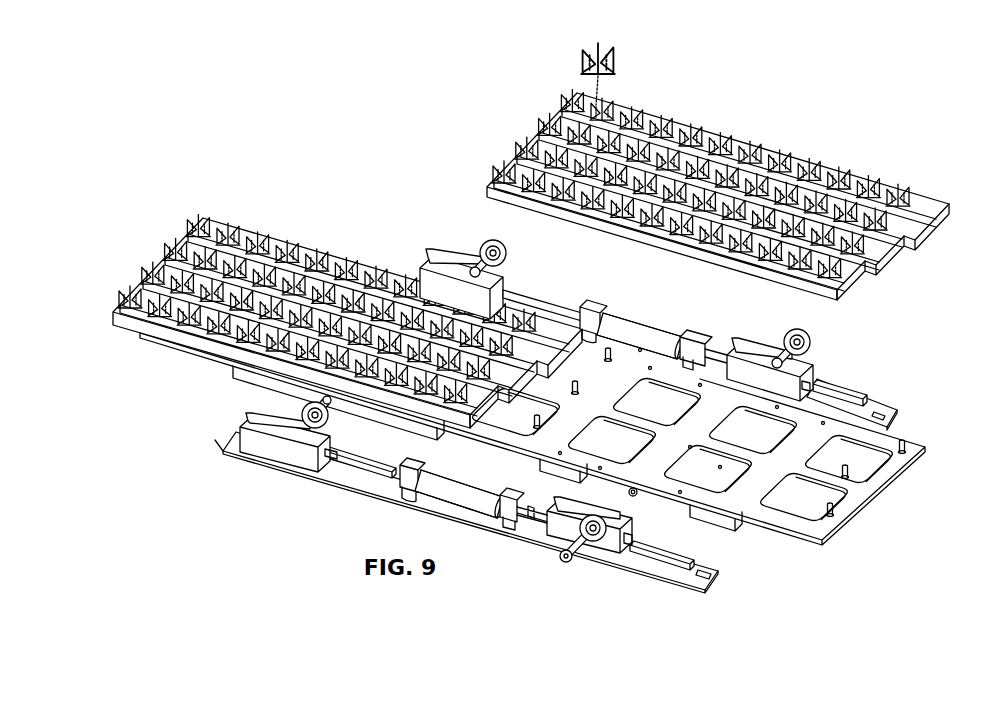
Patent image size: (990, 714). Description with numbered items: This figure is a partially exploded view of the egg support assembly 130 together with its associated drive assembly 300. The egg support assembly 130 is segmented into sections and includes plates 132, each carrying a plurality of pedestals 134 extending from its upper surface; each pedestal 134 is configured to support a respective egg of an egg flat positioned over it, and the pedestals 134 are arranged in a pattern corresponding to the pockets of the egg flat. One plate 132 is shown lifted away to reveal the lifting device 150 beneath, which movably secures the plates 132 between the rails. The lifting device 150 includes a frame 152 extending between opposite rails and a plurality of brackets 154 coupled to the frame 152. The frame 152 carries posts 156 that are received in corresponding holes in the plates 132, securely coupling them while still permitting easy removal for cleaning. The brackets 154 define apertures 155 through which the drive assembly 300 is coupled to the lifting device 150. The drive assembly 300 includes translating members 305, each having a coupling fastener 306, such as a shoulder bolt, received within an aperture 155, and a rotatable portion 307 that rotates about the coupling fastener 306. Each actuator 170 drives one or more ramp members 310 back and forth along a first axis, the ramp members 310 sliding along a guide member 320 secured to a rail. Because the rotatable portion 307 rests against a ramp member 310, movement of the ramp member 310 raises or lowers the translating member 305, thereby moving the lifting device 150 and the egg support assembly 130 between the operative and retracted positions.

The egg support assembly 130 is at (189, 226).
The plate 132 is at (836, 303).
The pedestal 134 is at (609, 30).
The lifting device 150 is at (776, 548).
The frame 152 is at (867, 490).
The bracket 154 is at (248, 376).
The aperture 155 is at (641, 504).
The post 156 is at (917, 443).
The actuator 170 is at (472, 494).
The drive assembly 300 is at (472, 425).
The translating member 305 is at (344, 425).
The coupling fastener 306 is at (577, 553).
The rotatable portion 307 is at (598, 541).
The ramp member 310 is at (284, 447).
The guide member 320 is at (705, 578).